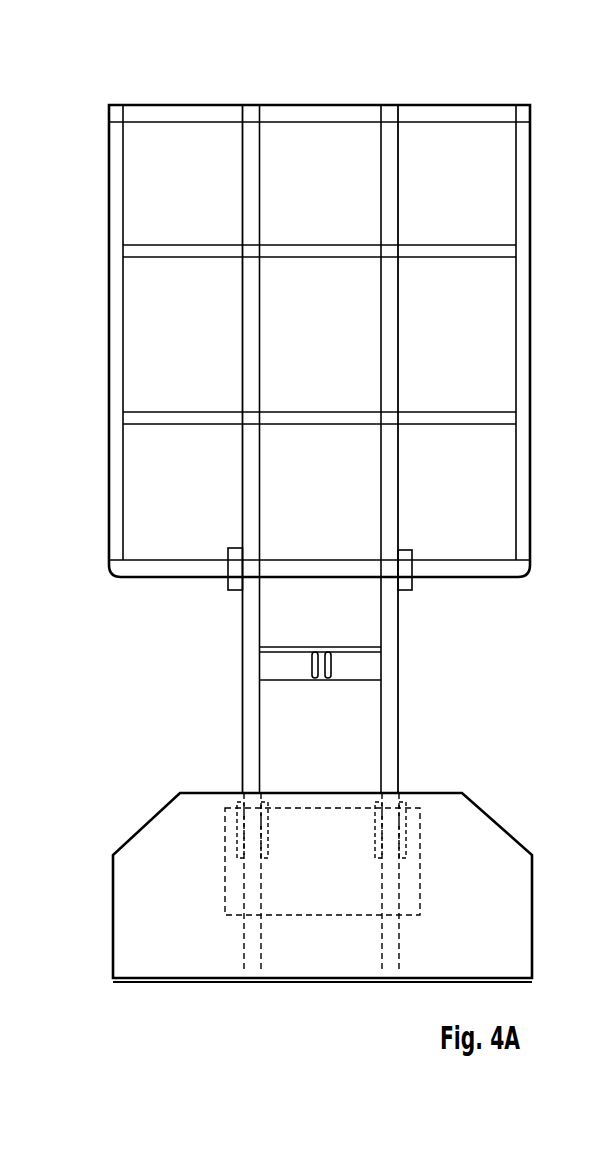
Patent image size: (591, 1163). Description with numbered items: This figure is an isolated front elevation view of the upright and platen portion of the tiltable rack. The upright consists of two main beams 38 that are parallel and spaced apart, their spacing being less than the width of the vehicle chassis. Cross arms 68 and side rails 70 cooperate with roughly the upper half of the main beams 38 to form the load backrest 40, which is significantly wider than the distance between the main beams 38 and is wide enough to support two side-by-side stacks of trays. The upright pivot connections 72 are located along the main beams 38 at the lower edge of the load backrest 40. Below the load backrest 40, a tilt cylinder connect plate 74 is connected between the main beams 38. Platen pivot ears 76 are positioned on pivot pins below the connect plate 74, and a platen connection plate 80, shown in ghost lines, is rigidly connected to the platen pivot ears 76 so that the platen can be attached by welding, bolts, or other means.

The load backrest 40 is at (196, 104).
The side rails 70 is at (343, 113).
The main beams 38 is at (389, 202).
The cross arms 68 is at (328, 248).
The upright pivot connections 72 is at (227, 569).
The tilt cylinder connect plate 74 is at (352, 667).
The platen pivot ears 76 is at (266, 820).
The platen connection plate 80 is at (422, 833).